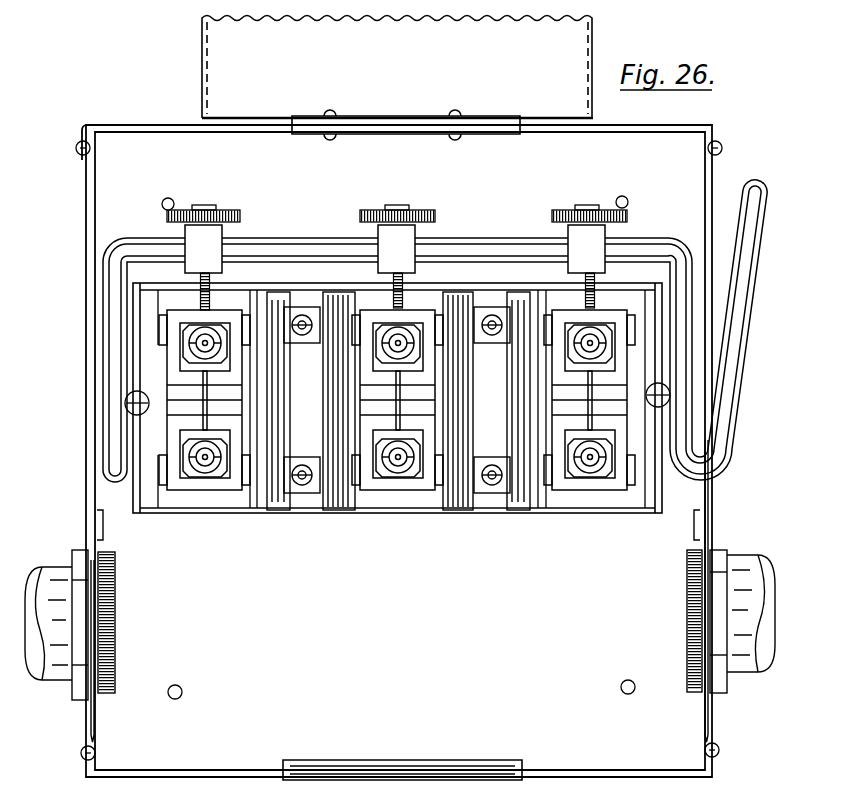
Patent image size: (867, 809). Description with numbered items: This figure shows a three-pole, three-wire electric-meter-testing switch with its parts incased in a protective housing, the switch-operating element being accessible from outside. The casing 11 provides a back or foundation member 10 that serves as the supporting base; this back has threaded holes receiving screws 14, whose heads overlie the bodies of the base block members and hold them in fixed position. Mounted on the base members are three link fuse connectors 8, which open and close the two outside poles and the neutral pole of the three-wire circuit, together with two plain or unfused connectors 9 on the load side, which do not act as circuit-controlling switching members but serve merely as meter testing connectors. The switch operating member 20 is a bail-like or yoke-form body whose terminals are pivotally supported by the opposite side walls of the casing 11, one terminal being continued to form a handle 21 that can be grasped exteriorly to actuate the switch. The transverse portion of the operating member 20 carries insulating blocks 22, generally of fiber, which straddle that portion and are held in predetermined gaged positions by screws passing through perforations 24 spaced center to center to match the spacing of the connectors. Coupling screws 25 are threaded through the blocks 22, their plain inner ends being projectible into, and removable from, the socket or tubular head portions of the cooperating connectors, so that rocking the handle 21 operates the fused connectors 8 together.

The link fuse connector 8 is at (207, 490).
The plain or unfused connector 9 is at (277, 492).
The back or foundation member 10 is at (400, 452).
The casing 11 is at (88, 400).
The screw 14 is at (128, 472).
The switch operating member 20 is at (455, 255).
The handle 21 is at (752, 367).
The insulating block 22 is at (215, 238).
The perforation 24 is at (285, 238).
The coupling screw 25 is at (392, 278).